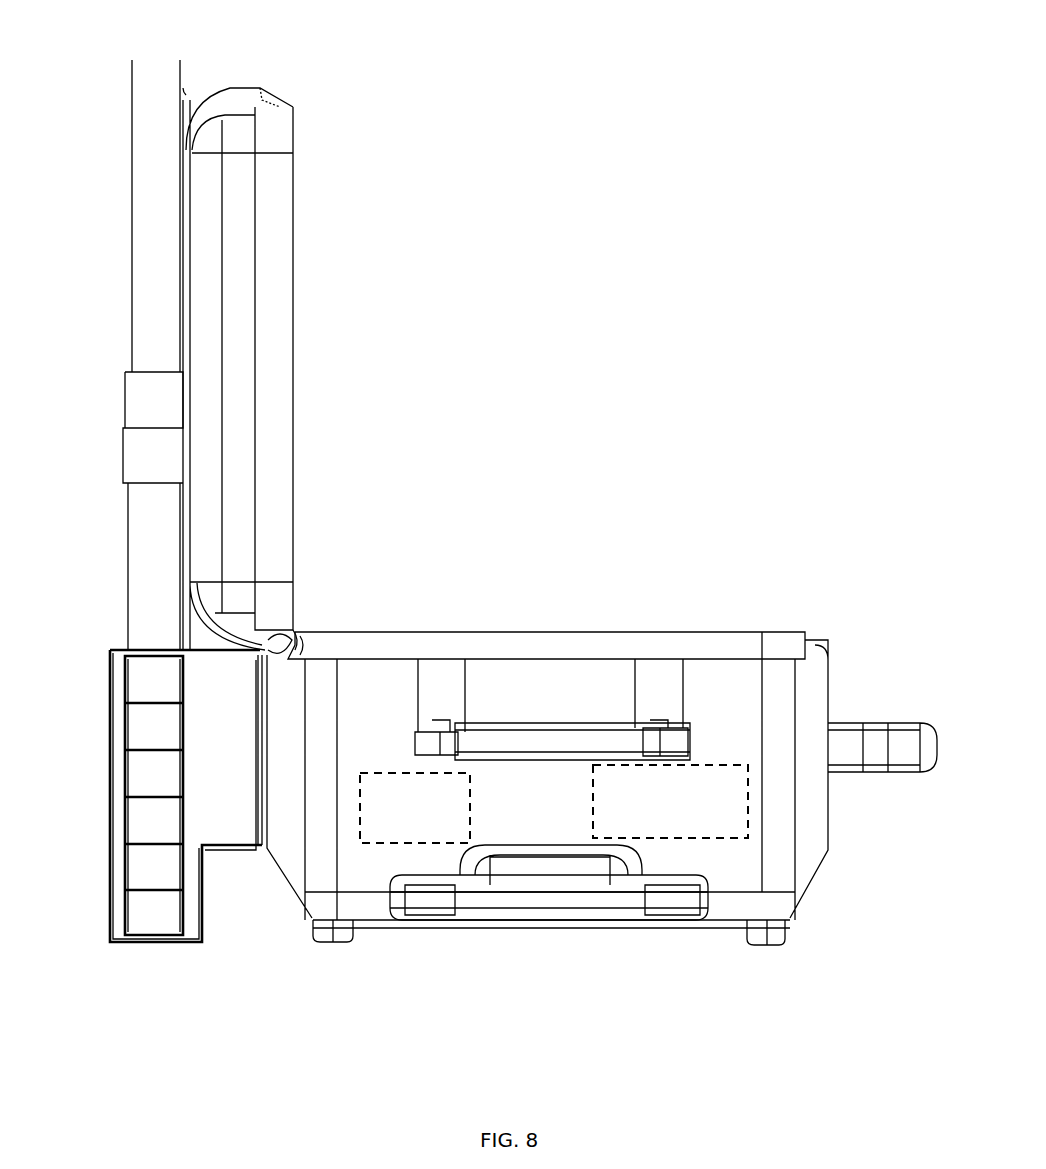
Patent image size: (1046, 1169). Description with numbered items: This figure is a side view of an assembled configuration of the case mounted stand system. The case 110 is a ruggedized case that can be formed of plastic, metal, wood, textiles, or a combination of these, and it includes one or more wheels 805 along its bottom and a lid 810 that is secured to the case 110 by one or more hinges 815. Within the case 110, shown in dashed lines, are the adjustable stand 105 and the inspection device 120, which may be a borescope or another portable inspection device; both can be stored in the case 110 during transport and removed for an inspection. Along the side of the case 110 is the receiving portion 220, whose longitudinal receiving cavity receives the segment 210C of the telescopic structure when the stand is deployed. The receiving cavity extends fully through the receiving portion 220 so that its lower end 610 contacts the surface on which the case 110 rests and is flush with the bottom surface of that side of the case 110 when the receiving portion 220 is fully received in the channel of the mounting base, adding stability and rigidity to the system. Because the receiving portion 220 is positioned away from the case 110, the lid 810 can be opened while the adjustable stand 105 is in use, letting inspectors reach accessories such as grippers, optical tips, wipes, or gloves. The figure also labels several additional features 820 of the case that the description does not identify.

The lid 810 is at (260, 84).
The segment 210C is at (150, 605).
The hinge 815 is at (283, 641).
The handle 820 is at (549, 742).
The case 110 is at (818, 652).
The wheels 805 is at (326, 933).
The receiving portion 220 is at (150, 912).
The lower end 610 is at (235, 797).
The inspection device 120 is at (415, 808).
The adjustable stand 105 is at (670, 801).